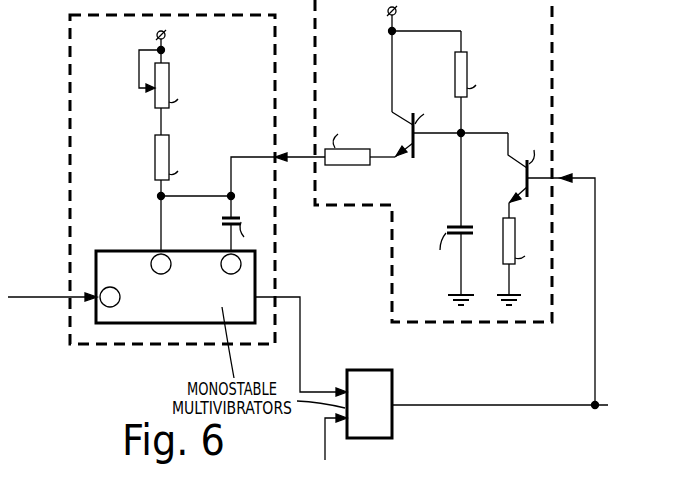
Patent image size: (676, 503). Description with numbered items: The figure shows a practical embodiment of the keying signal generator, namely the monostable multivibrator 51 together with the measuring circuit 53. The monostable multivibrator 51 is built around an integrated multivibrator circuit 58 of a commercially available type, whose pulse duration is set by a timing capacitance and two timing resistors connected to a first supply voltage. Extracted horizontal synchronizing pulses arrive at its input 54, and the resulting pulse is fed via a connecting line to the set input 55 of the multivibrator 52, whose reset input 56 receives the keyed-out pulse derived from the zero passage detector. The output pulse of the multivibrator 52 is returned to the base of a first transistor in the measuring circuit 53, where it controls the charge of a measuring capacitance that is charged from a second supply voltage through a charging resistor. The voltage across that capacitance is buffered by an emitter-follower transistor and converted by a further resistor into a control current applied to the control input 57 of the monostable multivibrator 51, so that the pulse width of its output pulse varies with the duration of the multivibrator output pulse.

The monostable multivibrator 51 is at (152, 198).
The multivibrator 52 is at (392, 388).
The measuring circuit 53 is at (553, 50).
The input 54 is at (70, 298).
The set input 55 is at (347, 390).
The reset input 56 is at (347, 427).
The control input 57 is at (281, 153).
The integrated multivibrator circuit 58 is at (189, 324).